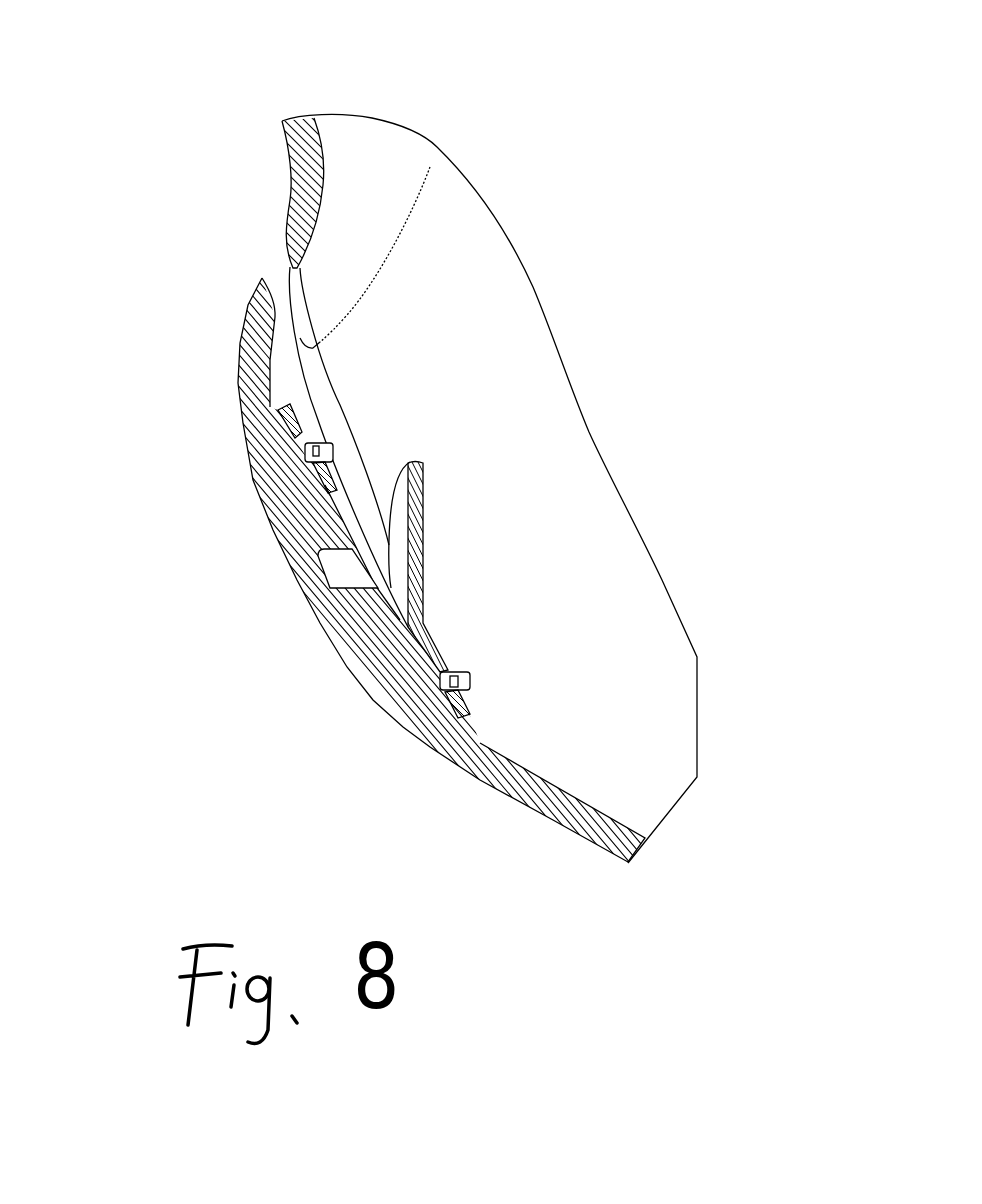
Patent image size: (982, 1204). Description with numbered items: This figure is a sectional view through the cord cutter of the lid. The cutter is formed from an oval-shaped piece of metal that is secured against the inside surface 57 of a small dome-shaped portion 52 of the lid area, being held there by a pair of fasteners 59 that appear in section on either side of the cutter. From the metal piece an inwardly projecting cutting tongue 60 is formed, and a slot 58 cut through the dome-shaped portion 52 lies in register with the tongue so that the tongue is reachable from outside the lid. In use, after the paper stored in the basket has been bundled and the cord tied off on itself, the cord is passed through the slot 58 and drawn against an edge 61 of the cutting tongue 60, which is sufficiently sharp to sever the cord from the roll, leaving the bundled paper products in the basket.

The dome-shaped portion 52 is at (358, 667).
The inside surface 57 is at (790, 812).
The slot 58 is at (437, 142).
The fasteners 59 is at (489, 925).
The cutting tongue 60 is at (427, 505).
The edge 61 is at (425, 543).